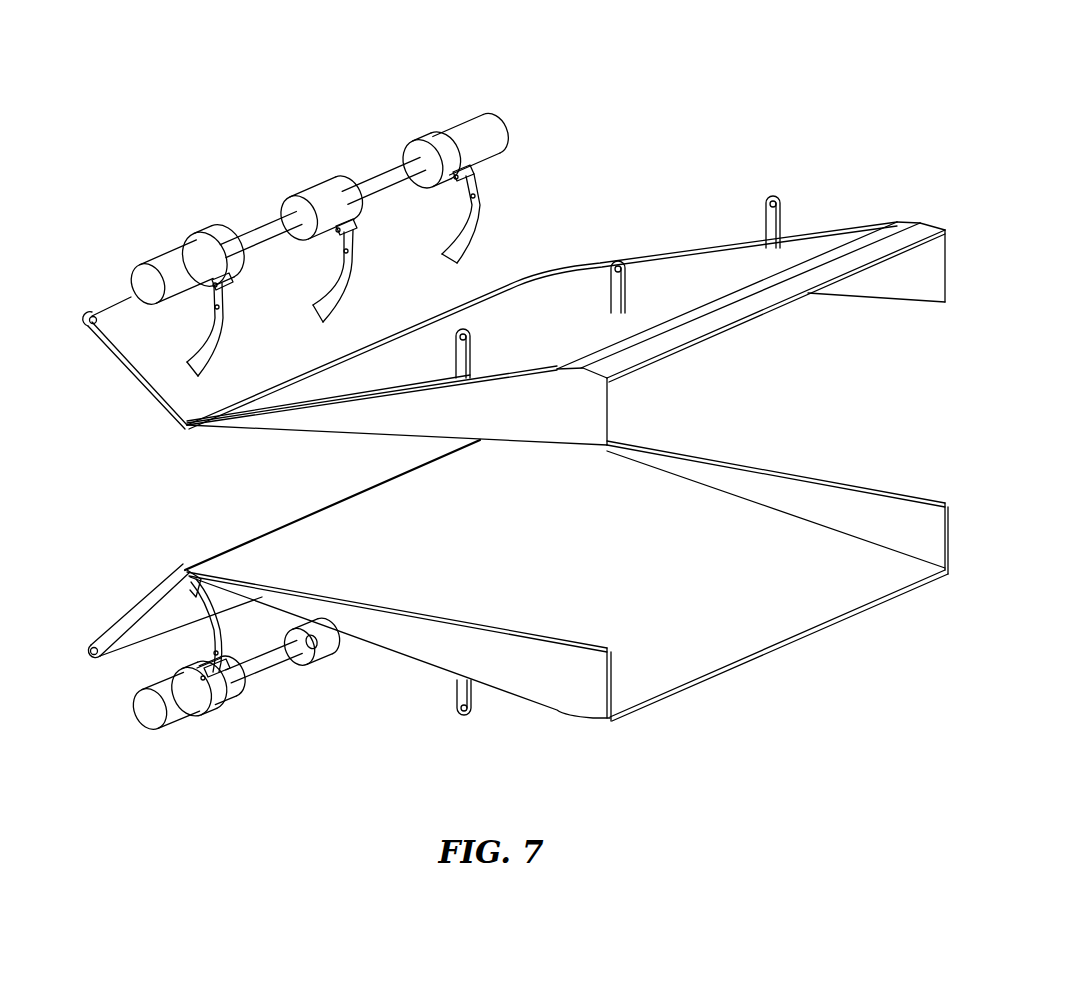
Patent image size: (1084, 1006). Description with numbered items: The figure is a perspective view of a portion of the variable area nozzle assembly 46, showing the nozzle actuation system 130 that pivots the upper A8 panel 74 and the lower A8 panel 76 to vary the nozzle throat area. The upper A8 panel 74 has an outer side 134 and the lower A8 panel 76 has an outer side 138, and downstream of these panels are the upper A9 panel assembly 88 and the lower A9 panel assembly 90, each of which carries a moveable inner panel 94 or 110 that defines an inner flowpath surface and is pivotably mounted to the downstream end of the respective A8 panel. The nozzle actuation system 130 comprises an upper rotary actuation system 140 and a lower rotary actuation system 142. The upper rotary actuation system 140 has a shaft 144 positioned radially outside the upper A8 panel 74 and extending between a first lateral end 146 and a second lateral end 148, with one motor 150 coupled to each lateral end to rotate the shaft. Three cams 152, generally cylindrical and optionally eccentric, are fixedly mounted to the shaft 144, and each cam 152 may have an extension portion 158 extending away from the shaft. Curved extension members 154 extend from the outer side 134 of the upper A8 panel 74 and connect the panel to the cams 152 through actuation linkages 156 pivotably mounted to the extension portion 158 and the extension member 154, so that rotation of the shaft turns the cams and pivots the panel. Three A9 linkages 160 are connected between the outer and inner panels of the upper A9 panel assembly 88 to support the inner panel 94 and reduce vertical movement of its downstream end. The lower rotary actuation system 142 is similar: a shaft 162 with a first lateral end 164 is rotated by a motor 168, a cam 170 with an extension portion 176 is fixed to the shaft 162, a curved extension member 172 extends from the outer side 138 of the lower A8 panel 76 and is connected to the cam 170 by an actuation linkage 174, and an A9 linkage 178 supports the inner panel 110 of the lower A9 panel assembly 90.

The variable area nozzle assembly 46 is at (827, 102).
The upper A8 panel 74 is at (488, 260).
The lower A8 panel 76 is at (128, 617).
The upper A9 panel assembly 88 is at (566, 266).
The lower A9 panel assembly 90 is at (566, 609).
The inner panel 94 is at (688, 292).
The inner panel 110 is at (542, 673).
The nozzle actuation system 130 is at (339, 197).
The outer side 134 is at (291, 313).
The outer side 138 is at (143, 609).
The upper rotary actuation system 140 is at (339, 191).
The lower rotary actuation system 142 is at (217, 678).
The shaft 144 is at (261, 232).
The first lateral end 146 is at (307, 183).
The second lateral end 148 is at (479, 98).
The motor 150 is at (146, 282).
The cam 152 is at (302, 170).
The extension member 154 is at (488, 207).
The actuation linkage 156 is at (492, 174).
The extension portion 158 is at (344, 182).
The A9 linkage 160 is at (781, 215).
The shaft 162 is at (276, 663).
The first lateral end 164 is at (161, 740).
The motor 168 is at (147, 713).
The cam 170 is at (217, 700).
The extension member 172 is at (184, 578).
The actuation linkage 174 is at (232, 660).
The extension portion 176 is at (194, 662).
The A9 linkage 178 is at (469, 700).